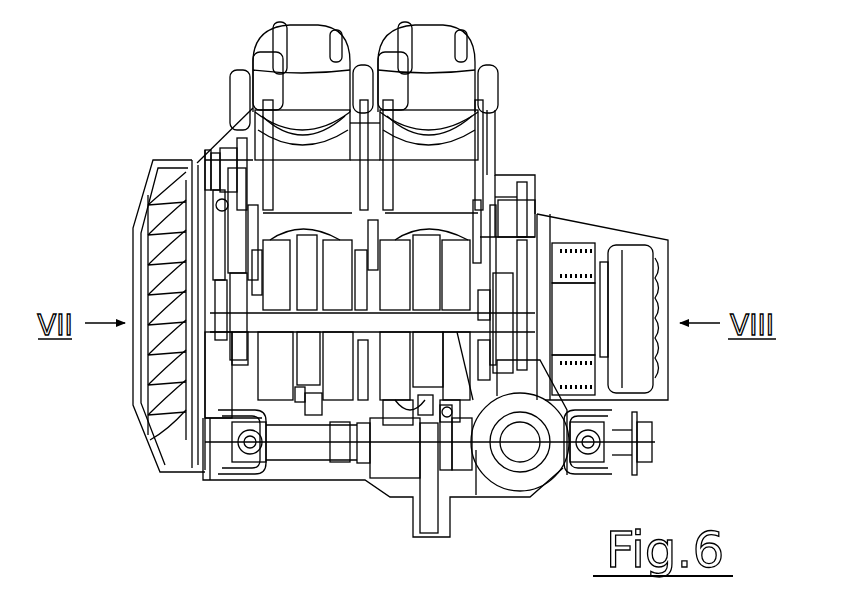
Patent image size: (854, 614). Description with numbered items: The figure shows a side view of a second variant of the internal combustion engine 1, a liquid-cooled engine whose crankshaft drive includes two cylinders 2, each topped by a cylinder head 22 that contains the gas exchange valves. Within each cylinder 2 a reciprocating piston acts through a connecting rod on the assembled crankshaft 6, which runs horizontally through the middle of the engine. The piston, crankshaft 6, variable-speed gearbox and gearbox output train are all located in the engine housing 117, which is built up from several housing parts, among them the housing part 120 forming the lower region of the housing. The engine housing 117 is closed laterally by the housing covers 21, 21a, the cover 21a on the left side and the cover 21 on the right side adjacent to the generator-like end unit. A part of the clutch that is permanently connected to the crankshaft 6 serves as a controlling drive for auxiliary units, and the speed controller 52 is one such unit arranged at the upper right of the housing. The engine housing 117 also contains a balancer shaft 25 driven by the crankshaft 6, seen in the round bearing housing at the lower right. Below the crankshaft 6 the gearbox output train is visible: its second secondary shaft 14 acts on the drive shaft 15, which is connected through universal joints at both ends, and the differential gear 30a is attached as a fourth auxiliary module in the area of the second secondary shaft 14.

The internal combustion engine 1 is at (542, 198).
The cylinder 2 is at (300, 133).
The crankshaft 6 is at (275, 372).
The second secondary shaft 14 is at (353, 447).
The drive shaft 15 is at (202, 472).
The housing cover 21 is at (668, 385).
The housing cover 21a is at (150, 190).
The cylinder head 22 is at (243, 88).
The balancer shaft 25 is at (475, 400).
The differential gear 30a is at (393, 473).
The speed controller 52 is at (507, 215).
The engine housing 117 is at (540, 217).
The housing part 120 is at (257, 482).